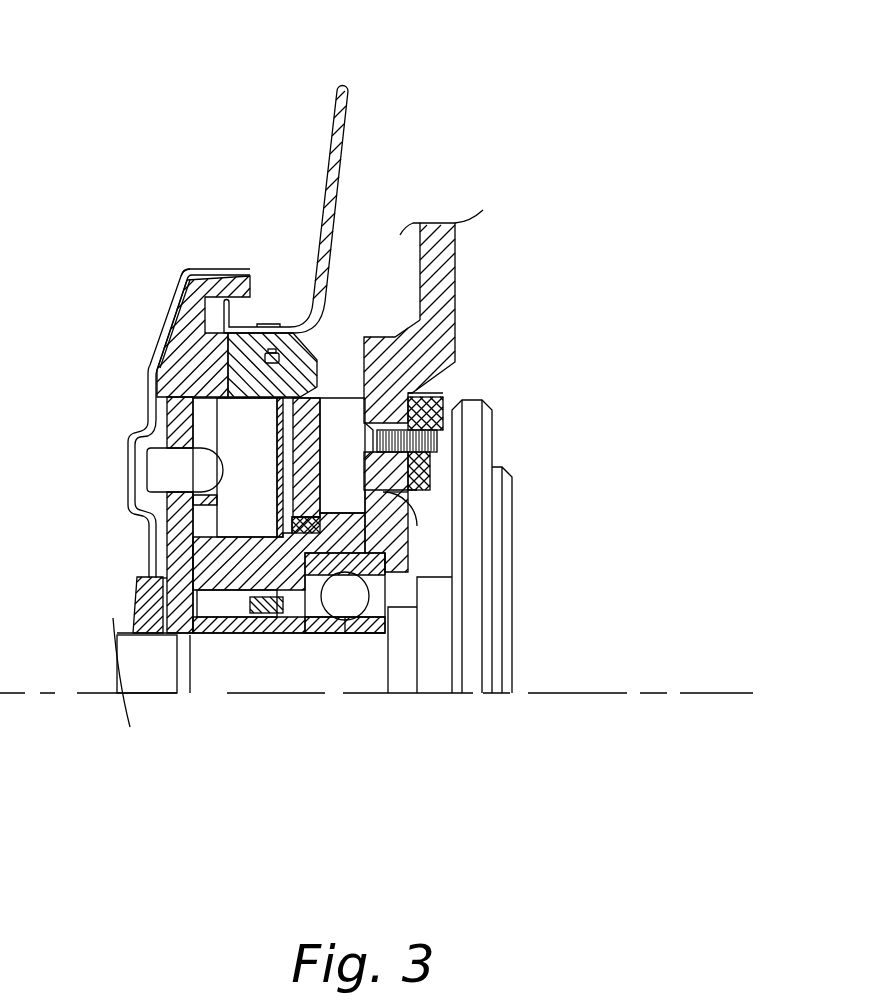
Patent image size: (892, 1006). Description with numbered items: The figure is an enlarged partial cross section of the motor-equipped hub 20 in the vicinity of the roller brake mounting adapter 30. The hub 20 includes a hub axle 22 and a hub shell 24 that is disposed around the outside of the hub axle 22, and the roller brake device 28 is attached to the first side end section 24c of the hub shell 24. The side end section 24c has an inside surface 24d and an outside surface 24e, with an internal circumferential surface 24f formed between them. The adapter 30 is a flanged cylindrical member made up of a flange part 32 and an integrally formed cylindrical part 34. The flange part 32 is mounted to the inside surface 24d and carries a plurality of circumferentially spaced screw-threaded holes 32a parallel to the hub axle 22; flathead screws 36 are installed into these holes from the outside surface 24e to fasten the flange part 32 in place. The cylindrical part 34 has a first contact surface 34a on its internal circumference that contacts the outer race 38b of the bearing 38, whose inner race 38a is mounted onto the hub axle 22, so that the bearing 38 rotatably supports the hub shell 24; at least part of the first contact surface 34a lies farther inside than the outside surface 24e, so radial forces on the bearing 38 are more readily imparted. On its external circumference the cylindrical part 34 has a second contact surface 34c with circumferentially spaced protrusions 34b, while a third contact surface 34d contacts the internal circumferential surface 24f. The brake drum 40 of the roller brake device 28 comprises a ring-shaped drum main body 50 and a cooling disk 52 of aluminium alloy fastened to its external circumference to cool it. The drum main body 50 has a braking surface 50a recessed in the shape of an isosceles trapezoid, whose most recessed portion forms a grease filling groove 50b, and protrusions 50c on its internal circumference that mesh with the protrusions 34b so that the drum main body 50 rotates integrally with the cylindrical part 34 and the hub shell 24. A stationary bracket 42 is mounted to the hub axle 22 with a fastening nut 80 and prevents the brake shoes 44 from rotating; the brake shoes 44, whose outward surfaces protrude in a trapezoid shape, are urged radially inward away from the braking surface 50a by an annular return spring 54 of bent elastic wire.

The motor-equipped hub 20 is at (478, 237).
The hub axle 22 is at (205, 683).
The hub shell 24 is at (463, 271).
The first side end section 24c is at (420, 330).
The inside surface 24d is at (420, 393).
The outside surface 24e is at (152, 450).
The internal circumferential surface 24f is at (385, 492).
The roller brake device 28 is at (210, 247).
The roller brake mounting adapter 30 is at (455, 384).
The flange part 32 is at (433, 464).
The screw-threaded holes 32a is at (440, 450).
The cylindrical part 34 is at (318, 520).
The first contact surface 34a is at (380, 580).
The protrusions 34b is at (288, 484).
The second contact surface 34c is at (297, 484).
The third contact surface 34d is at (398, 505).
The flathead screws 36 is at (494, 434).
The bearing 38 is at (367, 636).
The inner race 38a is at (343, 637).
The outer race 38b is at (322, 620).
The brake drum 40 is at (312, 362).
The stationary bracket 42 is at (186, 357).
The brake shoe 44 is at (226, 383).
The drum main body 50 is at (306, 345).
The braking surface 50a is at (274, 362).
The grease filling groove 50b is at (188, 283).
The protrusions 50c is at (293, 545).
The cooling disk 52 is at (345, 92).
The return spring 54 is at (194, 342).
The fastening nut 80 is at (113, 622).